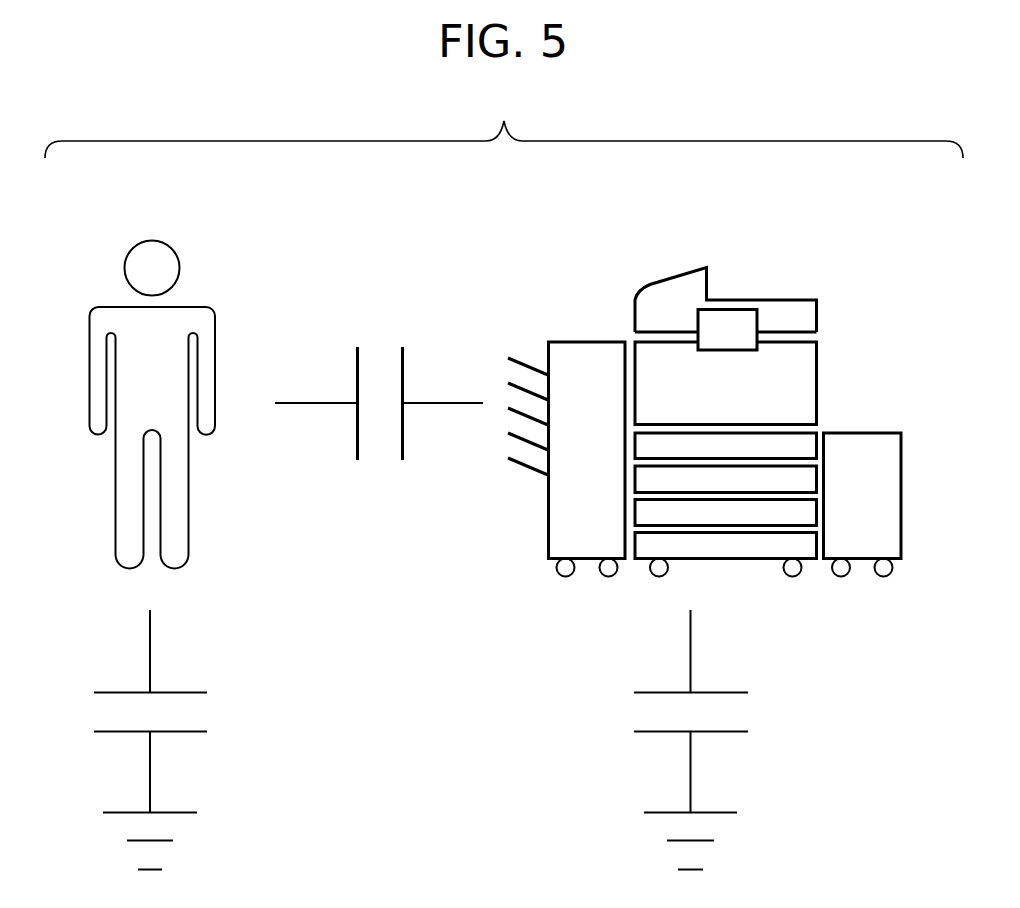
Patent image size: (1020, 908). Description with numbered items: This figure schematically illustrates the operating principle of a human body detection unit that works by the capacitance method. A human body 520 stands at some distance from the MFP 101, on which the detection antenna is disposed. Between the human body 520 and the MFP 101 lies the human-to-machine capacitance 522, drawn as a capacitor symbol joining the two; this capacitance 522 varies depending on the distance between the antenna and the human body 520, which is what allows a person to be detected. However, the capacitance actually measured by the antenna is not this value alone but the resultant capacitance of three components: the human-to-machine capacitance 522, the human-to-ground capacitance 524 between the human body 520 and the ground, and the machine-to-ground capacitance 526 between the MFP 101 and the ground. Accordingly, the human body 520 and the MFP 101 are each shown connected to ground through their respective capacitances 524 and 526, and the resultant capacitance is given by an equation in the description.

The human body 520 is at (178, 270).
The capacitance Chm 522 is at (376, 328).
The MFP 101 is at (817, 300).
The capacitance Chg 524 is at (208, 788).
The capacitance Cmg 526 is at (748, 788).